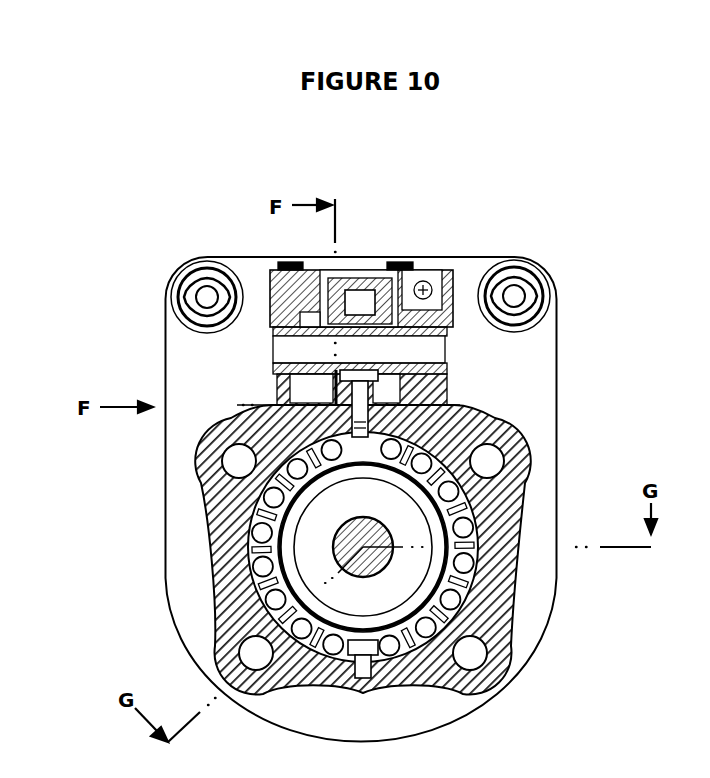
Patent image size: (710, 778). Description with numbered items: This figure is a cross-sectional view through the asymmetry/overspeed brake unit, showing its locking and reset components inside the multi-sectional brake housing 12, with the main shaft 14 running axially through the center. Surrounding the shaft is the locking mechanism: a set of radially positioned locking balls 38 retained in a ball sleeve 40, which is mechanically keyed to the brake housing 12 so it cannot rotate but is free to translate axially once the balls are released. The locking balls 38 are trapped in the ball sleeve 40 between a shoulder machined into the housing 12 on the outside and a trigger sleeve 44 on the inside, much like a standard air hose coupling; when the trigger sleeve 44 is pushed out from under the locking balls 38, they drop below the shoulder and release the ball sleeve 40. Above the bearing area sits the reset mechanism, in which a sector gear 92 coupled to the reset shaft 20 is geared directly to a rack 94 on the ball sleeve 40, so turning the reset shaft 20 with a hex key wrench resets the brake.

The brake housing 12 is at (537, 350).
The main shaft 14 is at (360, 533).
The reset shaft 20 is at (277, 372).
The locking balls 38 is at (275, 600).
The ball sleeve 40 is at (262, 510).
The trigger sleeve 44 is at (440, 583).
The sector gear 92 is at (338, 288).
The rack 94 is at (363, 447).